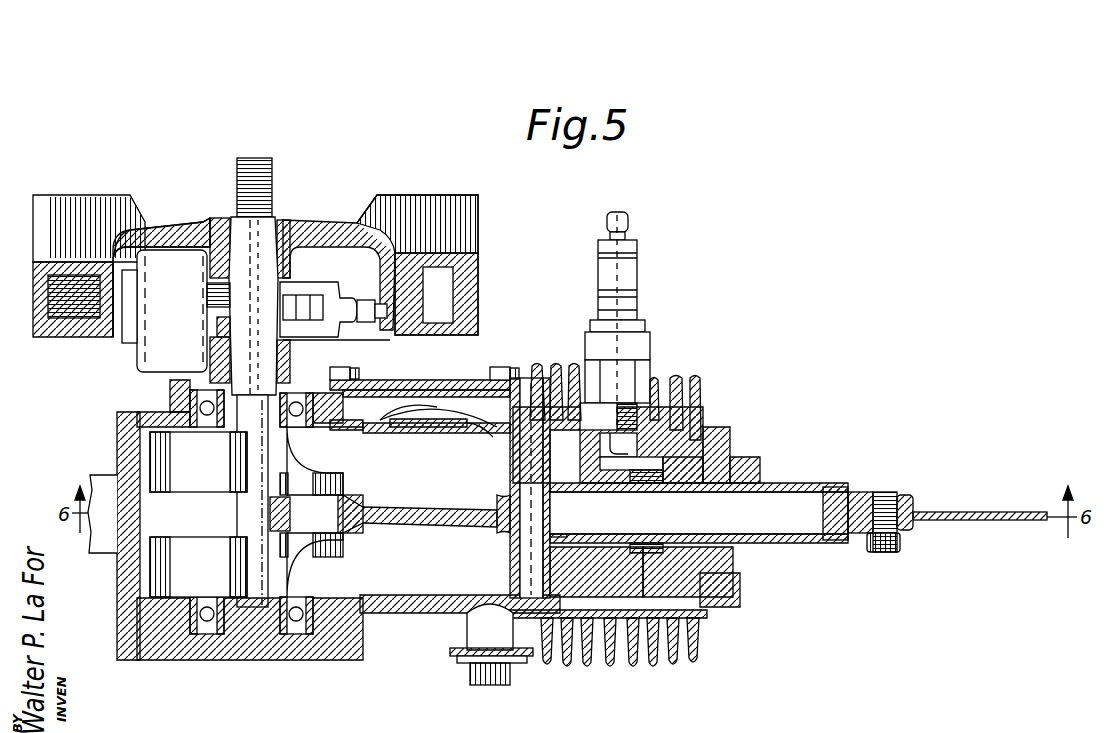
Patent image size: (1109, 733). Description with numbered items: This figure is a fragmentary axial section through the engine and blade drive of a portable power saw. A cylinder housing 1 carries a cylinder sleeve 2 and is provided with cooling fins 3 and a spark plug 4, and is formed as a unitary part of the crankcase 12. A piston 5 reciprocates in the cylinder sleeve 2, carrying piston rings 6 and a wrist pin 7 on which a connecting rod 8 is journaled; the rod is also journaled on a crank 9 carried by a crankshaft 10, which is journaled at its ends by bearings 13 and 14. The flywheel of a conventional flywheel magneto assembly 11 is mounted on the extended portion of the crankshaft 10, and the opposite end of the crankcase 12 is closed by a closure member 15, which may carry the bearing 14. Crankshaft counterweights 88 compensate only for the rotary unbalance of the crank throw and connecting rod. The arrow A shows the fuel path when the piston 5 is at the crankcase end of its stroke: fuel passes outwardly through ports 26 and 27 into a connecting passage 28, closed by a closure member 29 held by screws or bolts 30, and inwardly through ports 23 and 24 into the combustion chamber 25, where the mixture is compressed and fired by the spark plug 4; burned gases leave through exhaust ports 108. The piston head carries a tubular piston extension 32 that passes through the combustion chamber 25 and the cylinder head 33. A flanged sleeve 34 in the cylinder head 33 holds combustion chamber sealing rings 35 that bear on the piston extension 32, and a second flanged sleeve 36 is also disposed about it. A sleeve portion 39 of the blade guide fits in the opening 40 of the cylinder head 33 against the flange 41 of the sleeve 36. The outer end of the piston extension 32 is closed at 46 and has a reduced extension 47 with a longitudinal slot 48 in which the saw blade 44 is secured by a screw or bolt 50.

The cylinder housing 1 is at (388, 613).
The cylinder sleeve 2 is at (415, 598).
The cooling fins 3 is at (557, 366).
The spark plug 4 is at (638, 374).
The piston 5 is at (512, 567).
The piston rings 6 is at (563, 593).
The wrist pin 7 is at (527, 487).
The connecting rod 8 is at (416, 510).
The crank 9 is at (314, 497).
The crankshaft 10 is at (256, 425).
The flywheel magneto assembly 11 is at (92, 338).
The crankcase 12 is at (168, 398).
The bearing 13 is at (290, 405).
The bearing 14 is at (281, 598).
The closure member 15 is at (198, 660).
The port 23 is at (492, 432).
The port 24 is at (458, 428).
The combustion chamber 25 is at (648, 482).
The port 26 is at (382, 395).
The port 27 is at (378, 428).
The connecting passage 28 is at (422, 393).
The closure member 29 is at (453, 393).
The screws or bolts 30 is at (352, 370).
The piston extension 32 is at (786, 490).
The cylinder head 33 is at (688, 432).
The flanged sleeve 34 is at (648, 548).
The combustion chamber sealing rings 35 is at (668, 483).
The second flanged sleeve 36 is at (703, 478).
The sleeve portion 39 is at (745, 466).
The opening 40 is at (718, 430).
The flange 41 is at (725, 458).
The saw blade 44 is at (988, 521).
The closed outer end 46 is at (835, 540).
The reduced extension 47 is at (865, 500).
The slot 48 is at (908, 500).
The screw or bolt 50 is at (886, 550).
The crankshaft counterweights 88 is at (200, 482).
The exhaust ports 108 is at (450, 652).
The arrow A is at (403, 445).